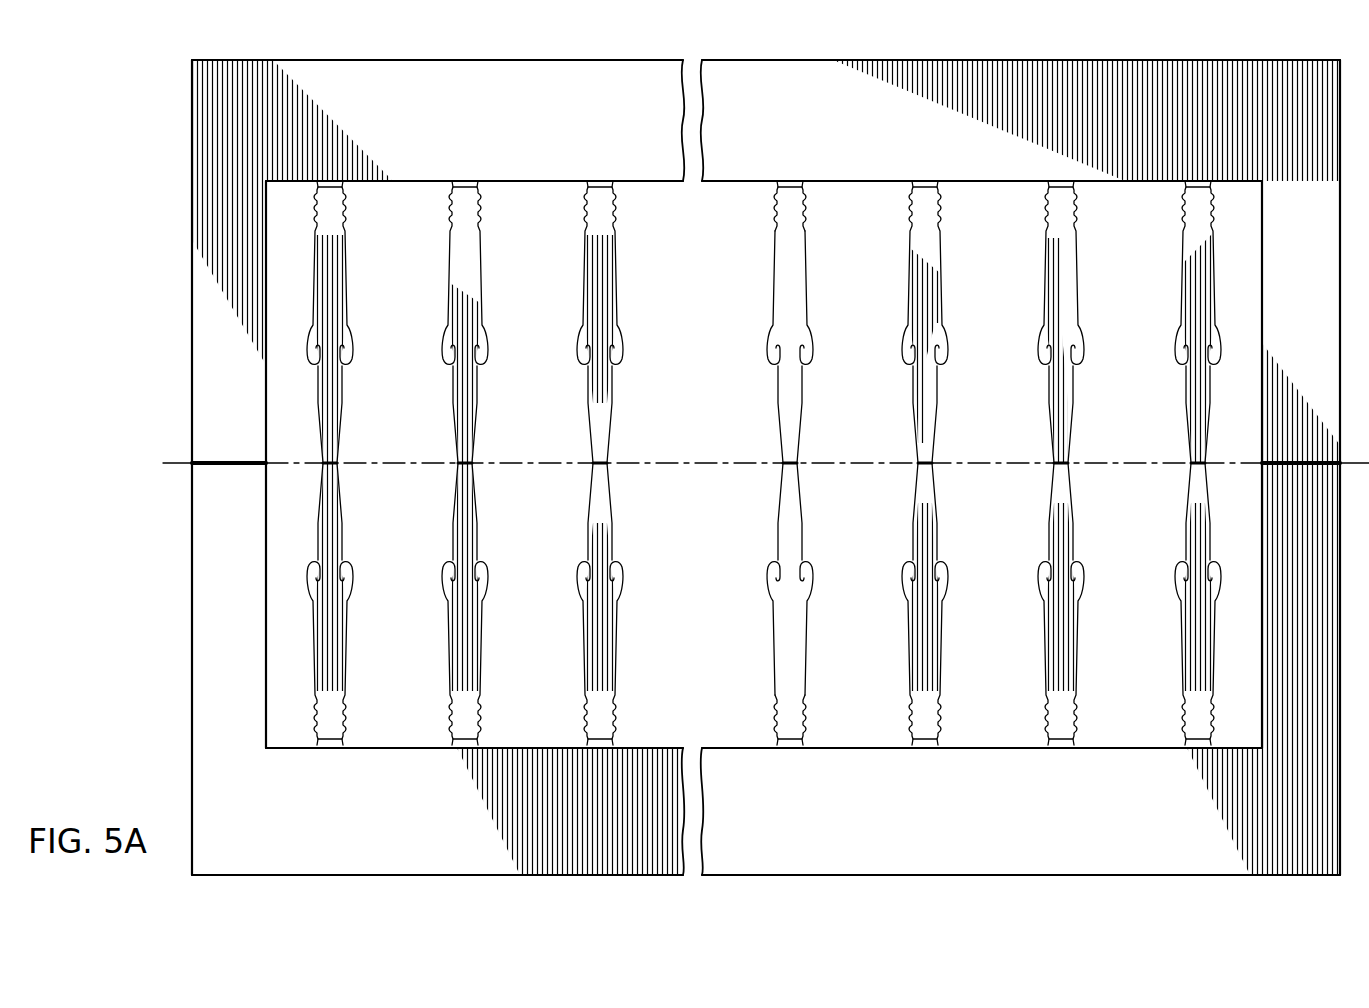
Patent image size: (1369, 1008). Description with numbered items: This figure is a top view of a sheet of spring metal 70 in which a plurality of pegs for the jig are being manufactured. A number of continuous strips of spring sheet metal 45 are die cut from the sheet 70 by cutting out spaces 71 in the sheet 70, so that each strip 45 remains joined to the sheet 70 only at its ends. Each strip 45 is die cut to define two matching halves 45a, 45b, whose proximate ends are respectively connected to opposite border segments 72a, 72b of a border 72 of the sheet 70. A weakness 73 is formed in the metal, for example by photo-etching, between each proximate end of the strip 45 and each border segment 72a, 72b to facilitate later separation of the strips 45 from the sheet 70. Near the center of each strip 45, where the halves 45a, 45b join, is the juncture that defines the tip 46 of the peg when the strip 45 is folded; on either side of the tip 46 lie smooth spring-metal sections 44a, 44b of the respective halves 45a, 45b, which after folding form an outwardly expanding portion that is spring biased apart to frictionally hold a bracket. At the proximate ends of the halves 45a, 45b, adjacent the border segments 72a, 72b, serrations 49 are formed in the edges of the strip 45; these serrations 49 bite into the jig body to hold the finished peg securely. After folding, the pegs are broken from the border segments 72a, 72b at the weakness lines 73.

The spring metal sheet 70 is at (212, 575).
The spaces 71 is at (385, 535).
The border 72 is at (190, 234).
The border segment 72a is at (538, 112).
The border segment 72b is at (997, 815).
The weakness 73 is at (463, 180).
The strip of spring sheet metal 45 is at (356, 261).
The half of the strip 45a is at (774, 279).
The half of the strip 45b is at (807, 664).
The smooth spring-metal section 44a is at (779, 401).
The smooth spring-metal section 44b is at (800, 507).
The tip 46 is at (796, 462).
The serrations 49 is at (773, 216).